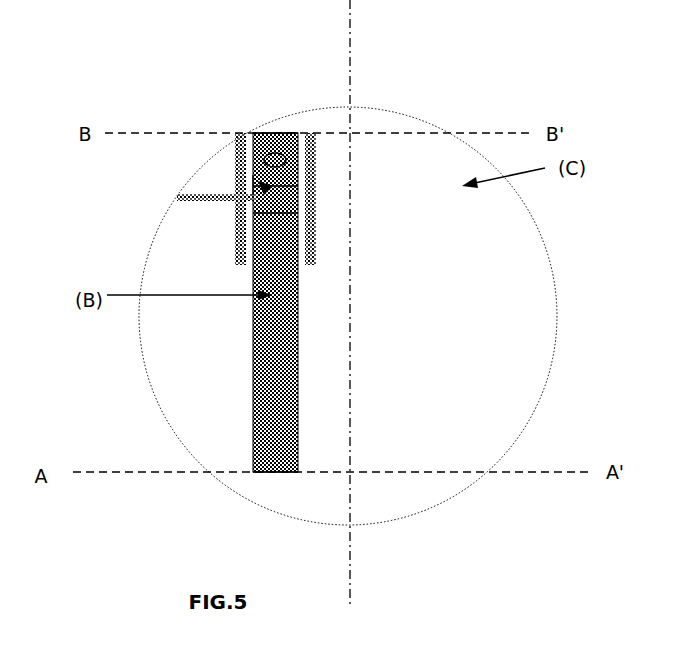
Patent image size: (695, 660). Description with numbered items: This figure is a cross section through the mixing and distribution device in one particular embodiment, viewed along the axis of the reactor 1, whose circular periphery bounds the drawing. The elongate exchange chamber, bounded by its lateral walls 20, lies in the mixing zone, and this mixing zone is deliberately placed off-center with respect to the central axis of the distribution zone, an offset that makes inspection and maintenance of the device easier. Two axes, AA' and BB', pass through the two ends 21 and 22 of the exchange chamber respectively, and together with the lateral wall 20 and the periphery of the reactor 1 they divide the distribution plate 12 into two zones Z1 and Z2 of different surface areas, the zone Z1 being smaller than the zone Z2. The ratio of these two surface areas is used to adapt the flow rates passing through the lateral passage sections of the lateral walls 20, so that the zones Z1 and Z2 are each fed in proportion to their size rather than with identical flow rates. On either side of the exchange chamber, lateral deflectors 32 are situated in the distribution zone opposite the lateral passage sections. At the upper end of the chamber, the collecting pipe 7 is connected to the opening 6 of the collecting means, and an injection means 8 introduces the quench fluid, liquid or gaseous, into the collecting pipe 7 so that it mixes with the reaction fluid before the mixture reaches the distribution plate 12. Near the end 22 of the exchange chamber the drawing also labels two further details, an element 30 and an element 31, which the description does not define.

The reactor 1 is at (545, 232).
The opening 6 is at (252, 185).
The collecting pipe 7 is at (262, 184).
The injection means 8 is at (185, 195).
The distribution plate 12 is at (223, 382).
The lateral wall 20 is at (253, 317).
The end of the exchange chamber 21 is at (265, 473).
The end of the exchange chamber 22 is at (272, 133).
The upper section 30 is at (288, 133).
The via 31 is at (280, 152).
The lateral deflector 32 is at (240, 205).
The zone Z1 is at (172, 360).
The zone Z2 is at (505, 333).